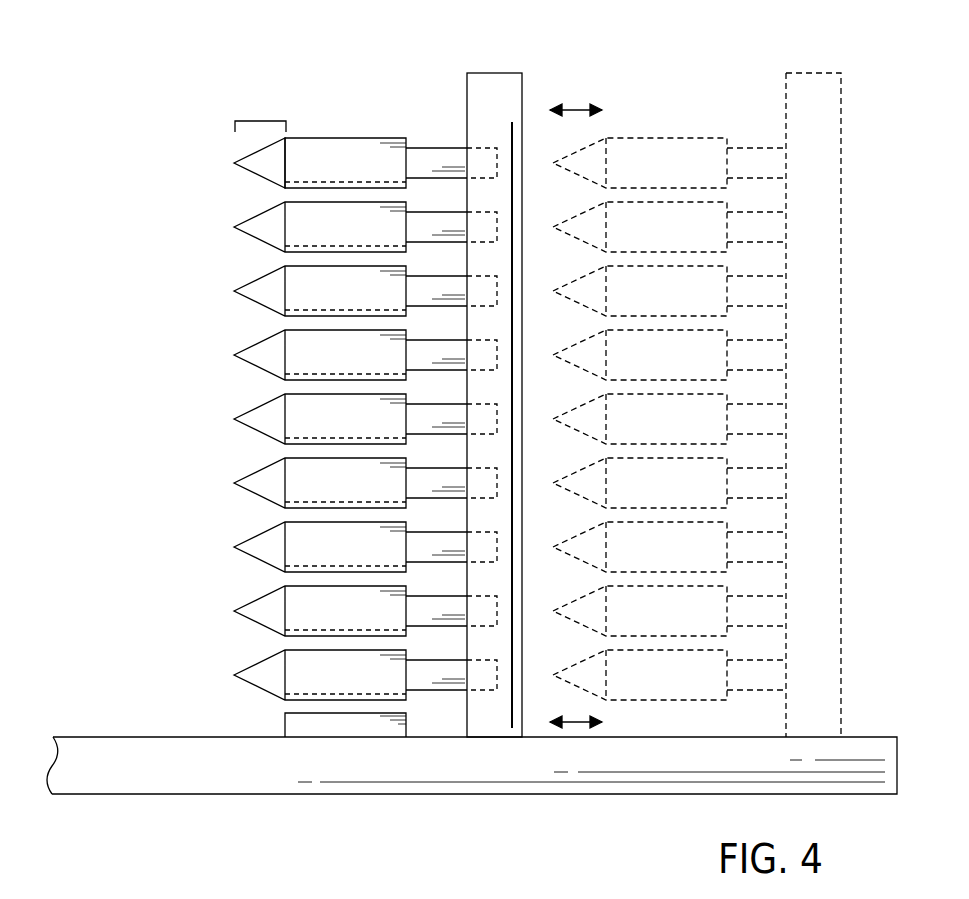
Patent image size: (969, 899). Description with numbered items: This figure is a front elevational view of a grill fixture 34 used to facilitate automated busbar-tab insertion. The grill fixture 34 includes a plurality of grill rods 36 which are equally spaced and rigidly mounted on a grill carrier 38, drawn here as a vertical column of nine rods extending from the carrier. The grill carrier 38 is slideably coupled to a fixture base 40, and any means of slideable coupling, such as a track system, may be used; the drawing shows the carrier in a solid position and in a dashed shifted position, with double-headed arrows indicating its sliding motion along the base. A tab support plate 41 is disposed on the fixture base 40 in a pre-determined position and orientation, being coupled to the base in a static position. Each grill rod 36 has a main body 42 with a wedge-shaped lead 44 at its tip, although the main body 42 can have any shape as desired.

The grill fixture 34 is at (160, 107).
The grill rod 36 is at (490, 382).
The grill carrier 38 is at (522, 90).
The fixture base 40 is at (98, 737).
The tab support plate 41 is at (285, 732).
The main body 42 is at (327, 137).
The wedge-shaped lead 44 is at (261, 121).